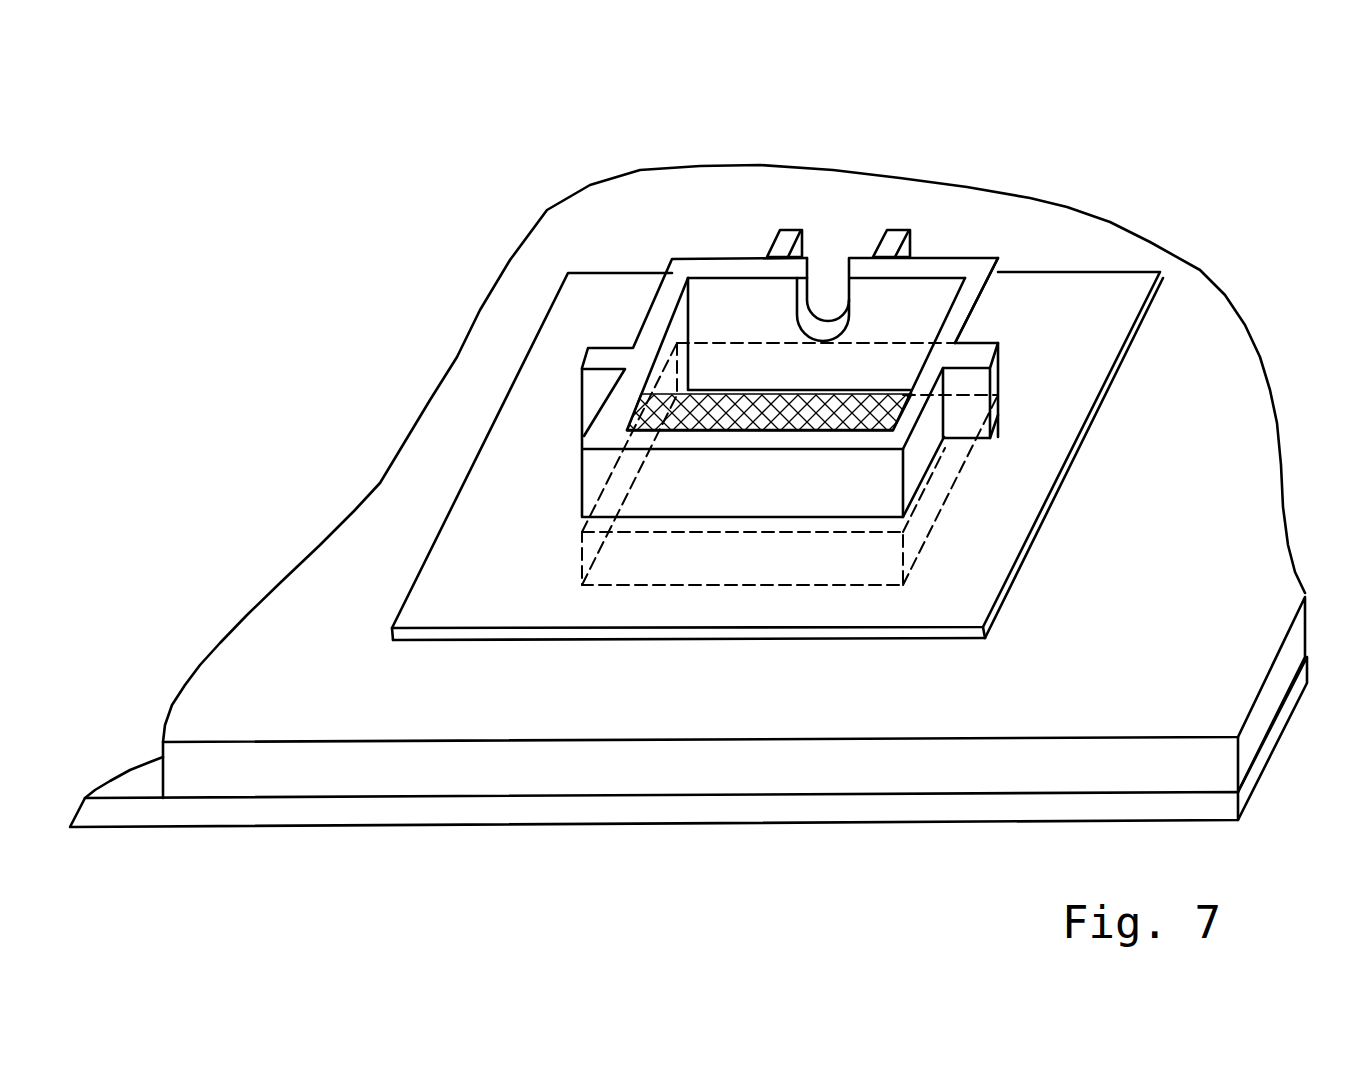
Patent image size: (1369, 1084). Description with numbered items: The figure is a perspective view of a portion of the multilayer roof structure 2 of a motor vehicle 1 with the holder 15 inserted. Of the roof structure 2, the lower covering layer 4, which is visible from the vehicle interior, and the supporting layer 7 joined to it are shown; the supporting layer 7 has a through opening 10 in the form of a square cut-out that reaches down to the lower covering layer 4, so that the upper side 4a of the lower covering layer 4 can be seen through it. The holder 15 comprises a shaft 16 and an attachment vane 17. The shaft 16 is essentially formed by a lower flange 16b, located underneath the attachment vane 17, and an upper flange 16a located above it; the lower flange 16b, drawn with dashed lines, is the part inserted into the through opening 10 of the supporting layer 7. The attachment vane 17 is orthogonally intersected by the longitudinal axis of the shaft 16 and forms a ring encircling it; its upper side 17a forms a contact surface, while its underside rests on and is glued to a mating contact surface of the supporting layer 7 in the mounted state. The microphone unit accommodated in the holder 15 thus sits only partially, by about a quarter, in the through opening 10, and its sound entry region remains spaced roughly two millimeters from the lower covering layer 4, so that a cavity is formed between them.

The motor vehicle 1 is at (1155, 163).
The roof structure 2 is at (1235, 193).
The lower covering layer 4 is at (295, 810).
The upper side of the lower covering layer 4a is at (710, 423).
The supporting layer 7 is at (290, 767).
The through opening 10 is at (748, 388).
The holder 15 is at (1033, 247).
The shaft 16 is at (932, 247).
The upper flange 16a is at (987, 310).
The lower flange 16b is at (907, 537).
The attachment vane 17 is at (1073, 383).
The upper side of the attachment vane 17a is at (1062, 423).